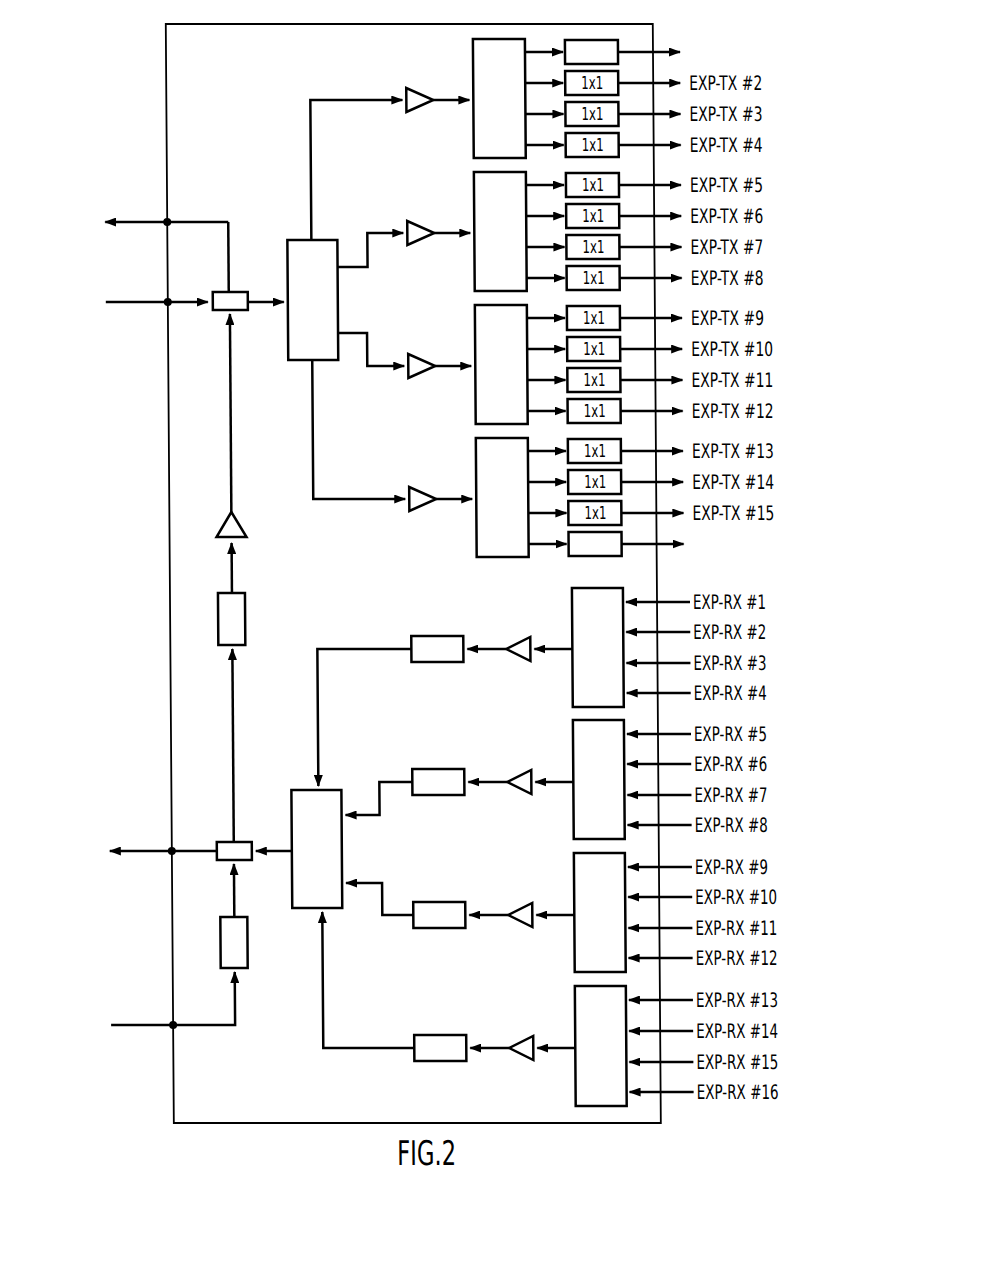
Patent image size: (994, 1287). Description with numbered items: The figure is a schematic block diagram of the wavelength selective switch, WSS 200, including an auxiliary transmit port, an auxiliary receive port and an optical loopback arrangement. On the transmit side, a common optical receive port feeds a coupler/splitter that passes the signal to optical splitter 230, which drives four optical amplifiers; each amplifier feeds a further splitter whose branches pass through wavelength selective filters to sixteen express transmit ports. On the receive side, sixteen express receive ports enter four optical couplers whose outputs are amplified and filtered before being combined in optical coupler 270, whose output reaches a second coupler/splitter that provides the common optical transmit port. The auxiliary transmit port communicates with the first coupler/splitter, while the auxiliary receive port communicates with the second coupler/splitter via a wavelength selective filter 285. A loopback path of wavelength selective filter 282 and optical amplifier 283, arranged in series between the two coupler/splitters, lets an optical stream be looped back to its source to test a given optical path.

The WSS 200 is at (170, 103).
The optical splitter 230 is at (290, 250).
The optical coupler 270 is at (290, 895).
The wavelength selective filter 282 is at (246, 627).
The optical amplifier 283 is at (239, 524).
The wavelength selective filter 285 is at (218, 942).